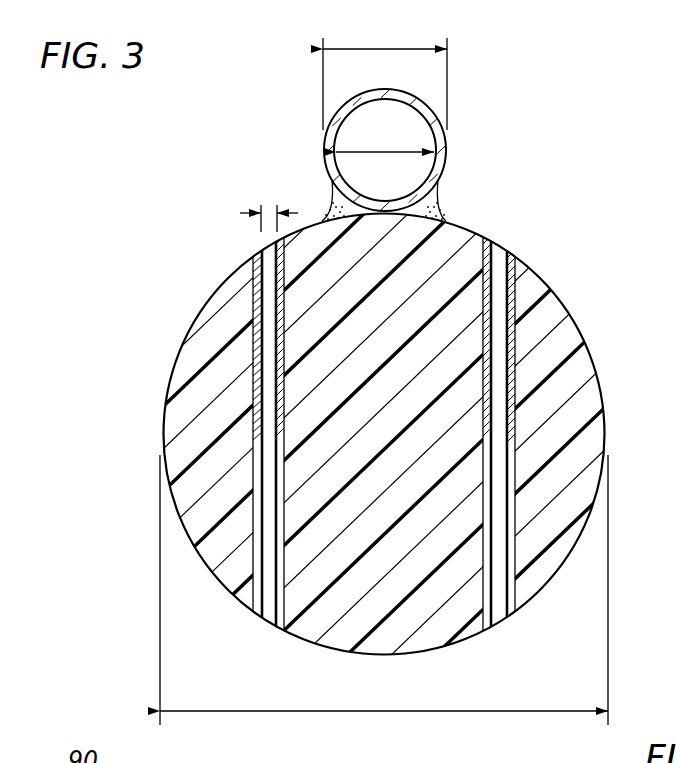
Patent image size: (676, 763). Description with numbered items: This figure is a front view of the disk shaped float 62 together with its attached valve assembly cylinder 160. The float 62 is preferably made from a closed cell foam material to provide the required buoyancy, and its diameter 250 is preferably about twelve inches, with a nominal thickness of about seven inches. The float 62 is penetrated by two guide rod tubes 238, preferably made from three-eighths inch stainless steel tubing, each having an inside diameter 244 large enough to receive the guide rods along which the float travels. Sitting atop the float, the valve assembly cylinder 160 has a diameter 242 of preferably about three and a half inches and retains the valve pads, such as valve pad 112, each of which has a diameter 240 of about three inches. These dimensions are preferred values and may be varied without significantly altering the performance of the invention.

The disk shaped float 62 is at (168, 405).
The valve pad 112 is at (354, 133).
The valve assembly cylinder 160 is at (422, 91).
The guide rod tubes 238 is at (262, 284).
The valve pad diameter 240 is at (372, 153).
The valve assembly diameter 242 is at (388, 47).
The inside diameter of guide rod tube 244 is at (268, 210).
The float disk diameter 250 is at (400, 711).